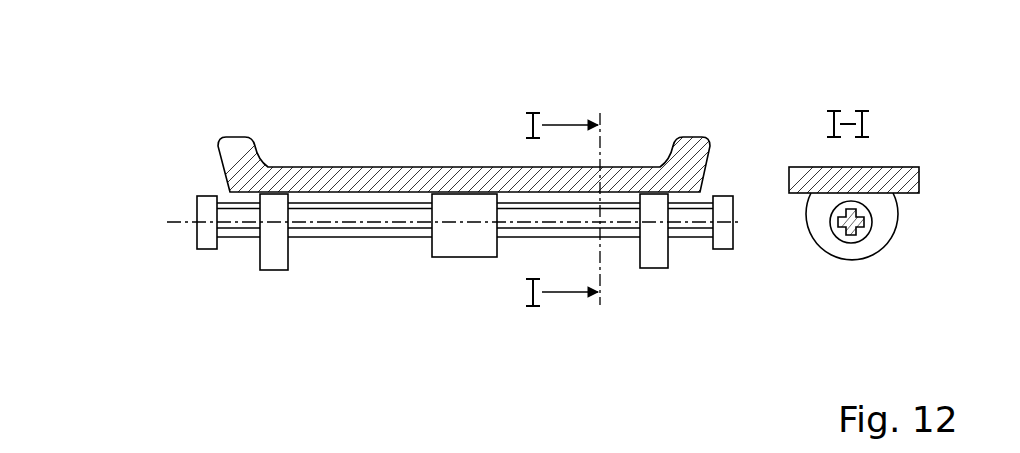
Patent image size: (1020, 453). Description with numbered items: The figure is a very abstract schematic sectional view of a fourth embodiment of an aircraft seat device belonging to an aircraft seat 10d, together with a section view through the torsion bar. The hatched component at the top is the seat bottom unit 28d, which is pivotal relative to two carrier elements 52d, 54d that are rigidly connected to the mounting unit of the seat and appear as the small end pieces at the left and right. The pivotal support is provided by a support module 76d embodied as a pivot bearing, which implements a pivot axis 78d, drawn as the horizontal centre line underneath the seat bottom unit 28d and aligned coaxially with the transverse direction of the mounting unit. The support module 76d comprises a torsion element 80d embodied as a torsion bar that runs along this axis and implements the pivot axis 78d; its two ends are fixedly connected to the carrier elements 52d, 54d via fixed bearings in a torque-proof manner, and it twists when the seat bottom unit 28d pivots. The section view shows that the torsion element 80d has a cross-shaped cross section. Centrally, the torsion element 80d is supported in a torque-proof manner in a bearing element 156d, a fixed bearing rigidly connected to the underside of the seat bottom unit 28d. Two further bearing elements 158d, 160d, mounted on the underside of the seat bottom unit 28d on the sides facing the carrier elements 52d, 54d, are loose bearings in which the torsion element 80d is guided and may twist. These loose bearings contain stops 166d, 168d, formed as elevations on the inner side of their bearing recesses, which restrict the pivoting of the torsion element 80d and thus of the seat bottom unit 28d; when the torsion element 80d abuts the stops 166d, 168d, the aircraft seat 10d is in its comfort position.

The aircraft seat 10d is at (378, 117).
The seat bottom unit 28d is at (457, 183).
The carrier element 54d is at (205, 210).
The carrier element 52d is at (725, 235).
The support module 76d is at (157, 222).
The pivot axis 78d is at (187, 222).
The torsion element 80d is at (378, 238).
The bearing element 156d is at (467, 243).
The bearing element 158d is at (657, 248).
The bearing element 160d is at (273, 240).
The stop 166d is at (850, 224).
The stop 168d is at (866, 214).